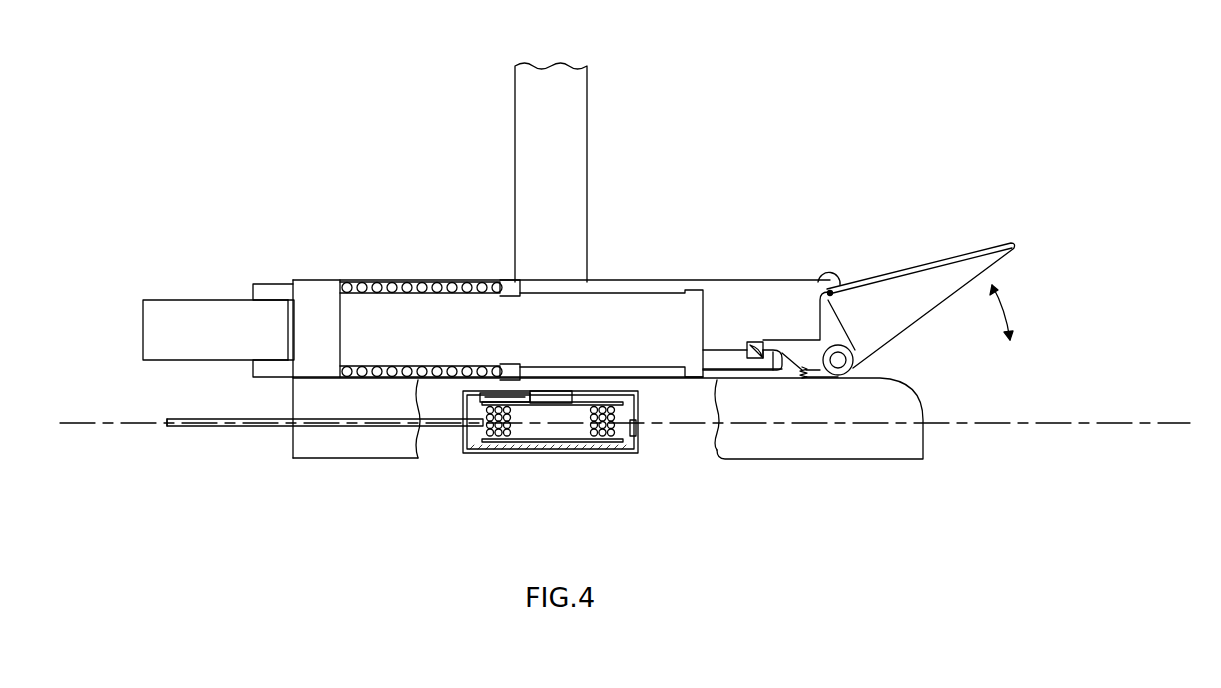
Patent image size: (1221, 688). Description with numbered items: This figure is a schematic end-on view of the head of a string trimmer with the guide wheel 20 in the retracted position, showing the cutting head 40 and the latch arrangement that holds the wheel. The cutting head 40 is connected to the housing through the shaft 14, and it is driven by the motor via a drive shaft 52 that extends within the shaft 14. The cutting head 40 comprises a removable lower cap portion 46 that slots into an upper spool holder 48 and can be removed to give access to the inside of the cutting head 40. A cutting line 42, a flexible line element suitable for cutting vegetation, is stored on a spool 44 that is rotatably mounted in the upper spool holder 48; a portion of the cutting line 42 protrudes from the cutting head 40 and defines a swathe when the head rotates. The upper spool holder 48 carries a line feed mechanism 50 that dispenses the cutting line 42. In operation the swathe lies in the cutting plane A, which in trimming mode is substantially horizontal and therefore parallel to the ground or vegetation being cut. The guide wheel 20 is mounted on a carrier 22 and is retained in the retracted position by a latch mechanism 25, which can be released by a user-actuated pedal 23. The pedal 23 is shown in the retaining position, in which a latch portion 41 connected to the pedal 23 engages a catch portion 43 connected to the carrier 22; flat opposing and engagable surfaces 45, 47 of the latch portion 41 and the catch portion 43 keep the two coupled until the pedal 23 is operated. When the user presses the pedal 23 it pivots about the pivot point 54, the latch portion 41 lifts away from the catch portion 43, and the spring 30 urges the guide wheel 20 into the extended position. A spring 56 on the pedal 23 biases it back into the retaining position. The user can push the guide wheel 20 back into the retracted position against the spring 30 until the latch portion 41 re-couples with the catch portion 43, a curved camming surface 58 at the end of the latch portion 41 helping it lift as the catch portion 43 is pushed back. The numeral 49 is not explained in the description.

The shaft 14 is at (588, 93).
The guide wheel 20 is at (143, 308).
The carrier 22 is at (660, 293).
The user-actuated pedal 23 is at (1014, 243).
The latch mechanism 25 is at (810, 276).
The spring 30 is at (462, 282).
The cutting head 40 is at (617, 447).
The latch portion 41 is at (775, 342).
The cutting line 42 is at (195, 427).
The catch portion 43 is at (778, 368).
The spool 44 is at (493, 442).
The engagable surface of latch portion 45 is at (757, 352).
The removable lower cap portion 46 is at (638, 442).
The engagable surface of catch portion 47 is at (770, 368).
The upper spool holder 48 is at (465, 400).
The shaft end 49 is at (178, 418).
The line feed mechanism 50 is at (487, 392).
The drive shaft 52 is at (558, 388).
The pivot point 54 is at (838, 360).
The spring 56 is at (807, 374).
The curved camming surface 58 is at (747, 350).
The cutting plane A is at (1130, 428).